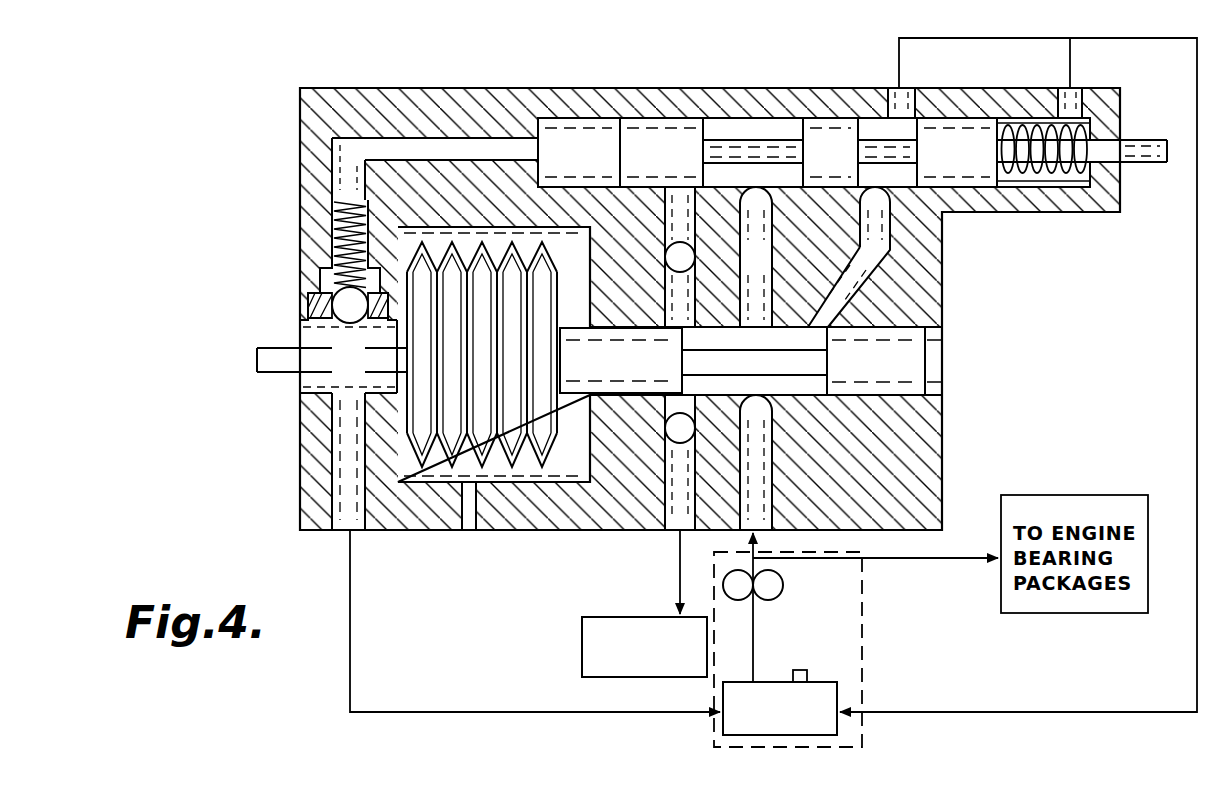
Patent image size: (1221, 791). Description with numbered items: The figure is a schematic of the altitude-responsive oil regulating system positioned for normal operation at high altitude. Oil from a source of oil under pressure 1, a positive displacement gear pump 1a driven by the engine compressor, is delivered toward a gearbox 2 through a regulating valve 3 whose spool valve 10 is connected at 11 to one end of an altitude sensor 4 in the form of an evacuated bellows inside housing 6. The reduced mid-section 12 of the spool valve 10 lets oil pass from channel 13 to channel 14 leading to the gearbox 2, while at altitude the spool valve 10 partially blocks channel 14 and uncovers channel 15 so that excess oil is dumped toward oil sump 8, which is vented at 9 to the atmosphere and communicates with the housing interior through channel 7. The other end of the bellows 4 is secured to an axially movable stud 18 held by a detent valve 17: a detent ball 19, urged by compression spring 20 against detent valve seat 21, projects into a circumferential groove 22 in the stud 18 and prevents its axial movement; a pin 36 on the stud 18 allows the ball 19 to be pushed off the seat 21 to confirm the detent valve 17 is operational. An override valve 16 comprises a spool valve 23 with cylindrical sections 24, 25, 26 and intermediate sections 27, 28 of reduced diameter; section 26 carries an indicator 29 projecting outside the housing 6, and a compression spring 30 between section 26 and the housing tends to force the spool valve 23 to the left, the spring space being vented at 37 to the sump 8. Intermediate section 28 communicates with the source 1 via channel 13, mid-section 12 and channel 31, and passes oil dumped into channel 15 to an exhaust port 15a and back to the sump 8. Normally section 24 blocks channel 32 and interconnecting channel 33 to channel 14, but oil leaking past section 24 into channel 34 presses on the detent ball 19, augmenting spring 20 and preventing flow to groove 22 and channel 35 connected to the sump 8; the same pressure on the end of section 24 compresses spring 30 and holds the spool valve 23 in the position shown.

The source of oil under pressure 1 is at (863, 574).
The positive displacement gear pump 1a is at (783, 586).
The gearbox 2 is at (648, 662).
The regulating valve 3 is at (952, 425).
The altitude sensor 4 is at (478, 243).
The housing 6 is at (356, 88).
The channel 7 is at (468, 512).
The oil sump 8 is at (782, 724).
The vent 9 is at (806, 670).
The spool valve 10 is at (884, 361).
The connection 11 is at (560, 360).
The mid-section 12 is at (758, 356).
The channel 13 is at (750, 522).
The channel 14 is at (676, 527).
The channel 15 is at (872, 262).
The exhaust port 15a is at (902, 98).
The override valve 16 is at (614, 82).
The detent valve 17 is at (290, 276).
The axially movable stud 18 is at (388, 383).
The detent ball 19 is at (332, 305).
The compression spring 20 is at (337, 239).
The detent valve seat 21 is at (304, 313).
The circumferential groove 22 is at (350, 363).
The spool valve 23 is at (618, 137).
The cylindrical section 24 is at (673, 143).
The cylindrical section 25 is at (845, 163).
The cylindrical section 26 is at (964, 163).
The intermediate section 27 is at (735, 150).
The intermediate section 28 is at (897, 153).
The indicator 29 is at (1143, 145).
The compression spring 30 is at (1042, 172).
The channel 31 is at (766, 267).
The channel 32 is at (692, 239).
The interconnecting channel 33 is at (676, 260).
The channel 34 is at (380, 150).
The channel 35 is at (348, 476).
The pin 36 is at (260, 361).
The vent 37 is at (1070, 98).